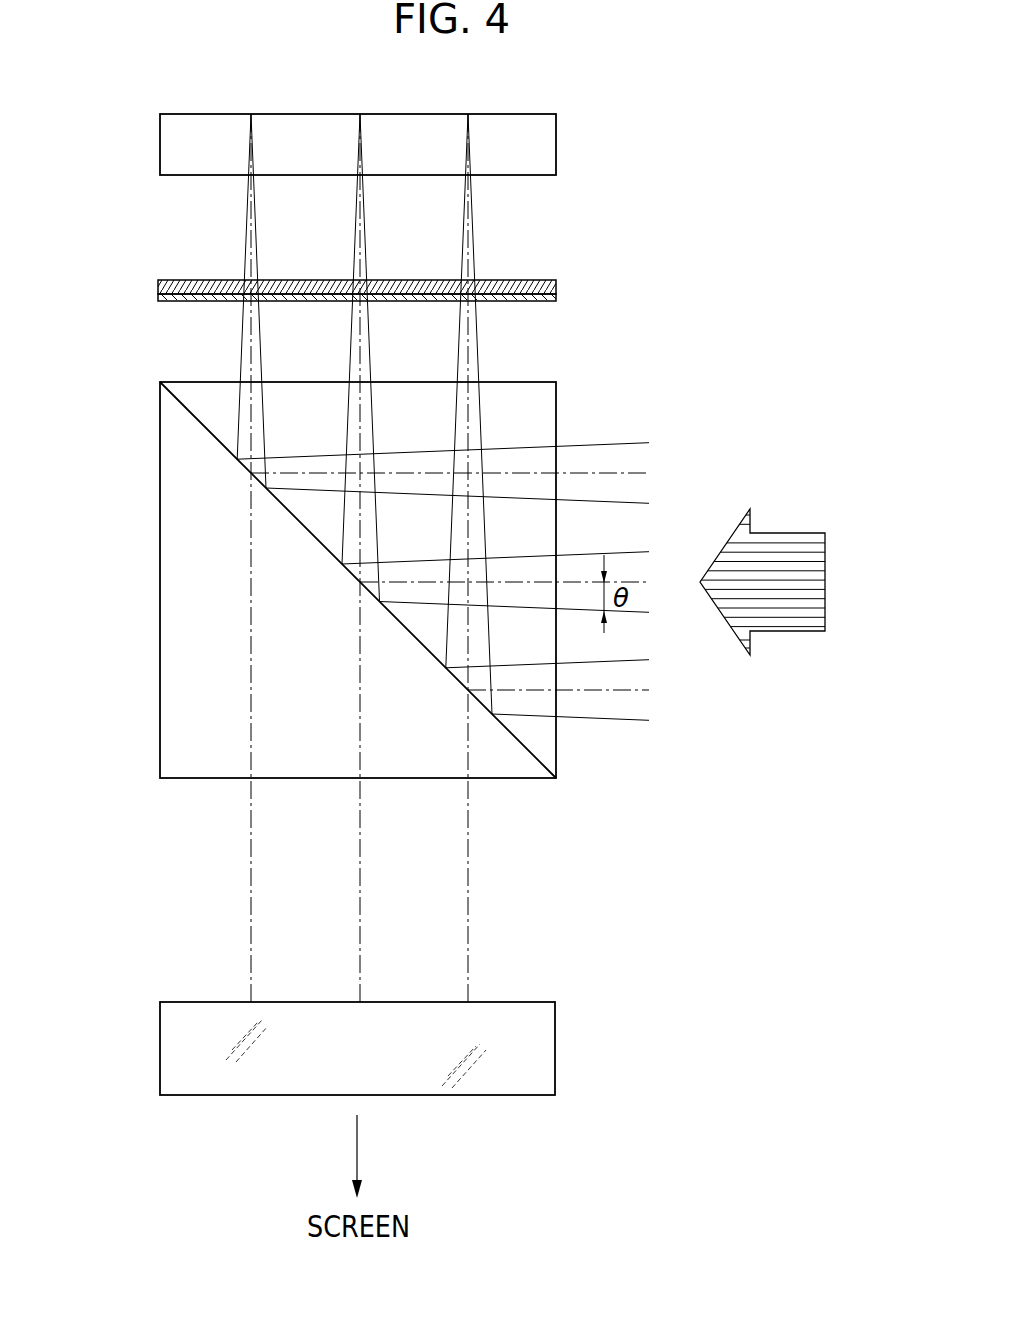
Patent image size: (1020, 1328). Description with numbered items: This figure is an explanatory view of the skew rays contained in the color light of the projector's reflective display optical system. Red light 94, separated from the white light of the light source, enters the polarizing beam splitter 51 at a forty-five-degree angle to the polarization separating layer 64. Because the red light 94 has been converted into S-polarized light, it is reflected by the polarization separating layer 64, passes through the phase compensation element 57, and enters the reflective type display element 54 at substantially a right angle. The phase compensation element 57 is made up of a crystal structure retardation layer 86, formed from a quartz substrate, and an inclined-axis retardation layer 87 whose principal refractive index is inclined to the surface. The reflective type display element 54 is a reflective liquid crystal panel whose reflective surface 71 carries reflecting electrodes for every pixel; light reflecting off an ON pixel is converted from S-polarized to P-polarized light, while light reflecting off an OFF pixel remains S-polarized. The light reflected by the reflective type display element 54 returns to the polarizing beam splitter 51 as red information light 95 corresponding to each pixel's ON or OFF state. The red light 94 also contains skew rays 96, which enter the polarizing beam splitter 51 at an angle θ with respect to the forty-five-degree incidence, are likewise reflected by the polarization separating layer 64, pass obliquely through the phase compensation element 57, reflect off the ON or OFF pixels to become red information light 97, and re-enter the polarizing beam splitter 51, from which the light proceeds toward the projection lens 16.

The reflective surface 71 is at (530, 114).
The reflective type display element 54 is at (404, 154).
The phase compensation element 57 is at (407, 291).
The crystal structure retardation layer 86 is at (158, 284).
The inclined-axis retardation layer 87 is at (158, 297).
The polarizing beam splitter 51 is at (334, 633).
The polarization separating layer 64 is at (539, 768).
The red information light 95 is at (360, 428).
The red information light 97 is at (477, 362).
The skew rays 96 is at (632, 723).
The red light 94 is at (797, 533).
The projection lens 16 is at (555, 1026).